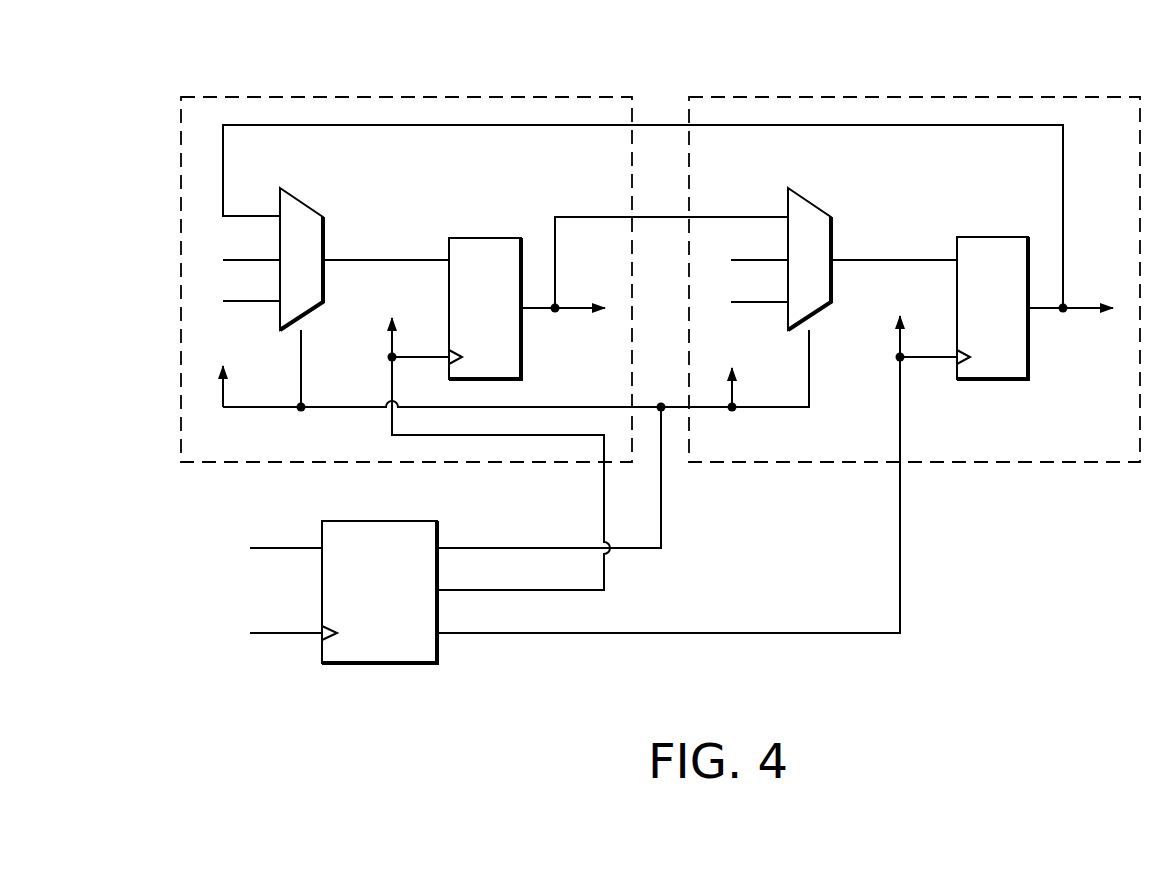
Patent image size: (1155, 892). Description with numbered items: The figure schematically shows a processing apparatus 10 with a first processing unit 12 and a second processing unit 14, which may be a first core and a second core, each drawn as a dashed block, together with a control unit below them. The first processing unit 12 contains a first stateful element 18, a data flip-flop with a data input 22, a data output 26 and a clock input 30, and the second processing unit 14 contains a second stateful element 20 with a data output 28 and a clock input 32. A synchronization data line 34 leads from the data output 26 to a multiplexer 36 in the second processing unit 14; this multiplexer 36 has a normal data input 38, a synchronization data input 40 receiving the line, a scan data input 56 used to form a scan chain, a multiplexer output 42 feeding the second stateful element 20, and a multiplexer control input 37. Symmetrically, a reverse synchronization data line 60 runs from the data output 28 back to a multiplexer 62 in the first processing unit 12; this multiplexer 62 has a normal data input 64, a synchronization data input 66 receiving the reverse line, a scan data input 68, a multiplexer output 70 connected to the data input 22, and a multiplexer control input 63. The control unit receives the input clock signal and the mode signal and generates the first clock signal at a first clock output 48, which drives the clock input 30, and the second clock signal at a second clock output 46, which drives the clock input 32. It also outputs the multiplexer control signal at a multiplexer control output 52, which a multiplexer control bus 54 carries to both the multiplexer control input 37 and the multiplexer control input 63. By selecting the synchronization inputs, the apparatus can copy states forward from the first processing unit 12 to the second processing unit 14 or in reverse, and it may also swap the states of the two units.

The processing apparatus 10 is at (931, 718).
The first processing unit 12 is at (413, 97).
The second processing unit 14 is at (903, 97).
The first stateful element 18 is at (477, 237).
The second stateful element 20 is at (985, 236).
The data input 22 is at (447, 259).
The data output 26 is at (524, 310).
The data output 28 is at (1032, 310).
The clock input 30 is at (448, 356).
The clock input 32 is at (956, 356).
The synchronization data line 34 is at (662, 219).
The multiplexer 36 is at (806, 200).
The multiplexer control input 37 is at (812, 318).
The normal data input 38 is at (786, 259).
The synchronization data input 40 is at (786, 216).
The multiplexer output 42 is at (833, 259).
The second clock output 46 is at (439, 633).
The first clock output 48 is at (439, 590).
The multiplexer control output 52 is at (439, 547).
The multiplexer control bus 54 is at (662, 519).
The scan data input 56 is at (786, 301).
The reverse synchronization data line 60 is at (661, 127).
The multiplexer 62 is at (297, 200).
The multiplexer control input 63 is at (304, 318).
The normal data input 64 is at (278, 259).
The synchronization data input 66 is at (278, 215).
The scan data input 68 is at (278, 300).
The multiplexer output 70 is at (325, 259).